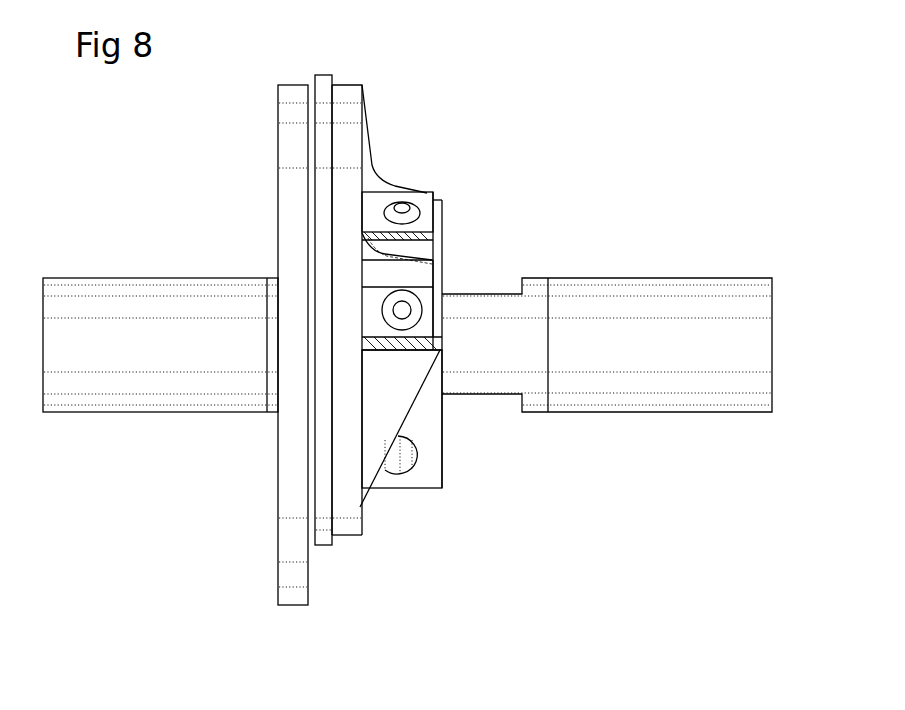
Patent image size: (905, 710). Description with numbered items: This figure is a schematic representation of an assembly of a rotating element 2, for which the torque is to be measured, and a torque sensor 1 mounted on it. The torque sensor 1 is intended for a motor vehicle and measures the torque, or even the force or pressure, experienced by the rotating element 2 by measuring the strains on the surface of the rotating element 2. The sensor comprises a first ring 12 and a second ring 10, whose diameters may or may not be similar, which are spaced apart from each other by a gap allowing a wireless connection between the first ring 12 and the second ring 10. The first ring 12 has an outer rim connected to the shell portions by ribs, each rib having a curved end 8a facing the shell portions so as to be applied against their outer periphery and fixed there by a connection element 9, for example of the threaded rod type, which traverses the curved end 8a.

The torque sensor 1 is at (413, 178).
The rotating element 2 is at (637, 303).
The curved end 8a is at (425, 302).
The connection element 9 is at (402, 310).
The second ring 10 is at (288, 202).
The first ring 12 is at (345, 537).